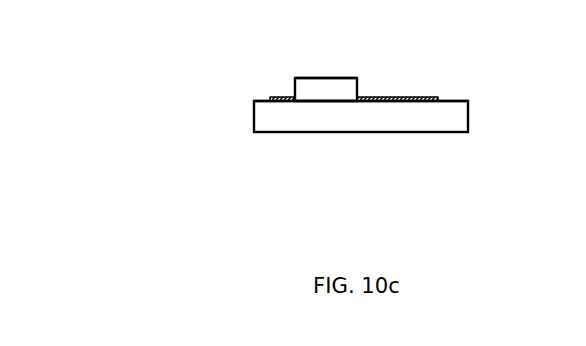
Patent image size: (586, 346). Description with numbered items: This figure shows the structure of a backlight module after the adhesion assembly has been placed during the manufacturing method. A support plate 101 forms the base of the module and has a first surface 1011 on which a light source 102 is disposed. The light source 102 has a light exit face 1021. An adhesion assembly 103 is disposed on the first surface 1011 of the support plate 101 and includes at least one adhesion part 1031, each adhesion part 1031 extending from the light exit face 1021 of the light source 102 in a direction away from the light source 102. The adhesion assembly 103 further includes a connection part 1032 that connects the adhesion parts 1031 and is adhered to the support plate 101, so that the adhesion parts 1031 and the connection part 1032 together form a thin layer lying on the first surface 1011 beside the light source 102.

The support plate 101 is at (440, 118).
The first surface 1011 is at (268, 98).
The light source 102 is at (326, 90).
The light exit face 1021 is at (359, 86).
The adhesion assembly 103 is at (367, 197).
The adhesion part 1031 is at (408, 100).
The connection part 1032 is at (285, 100).